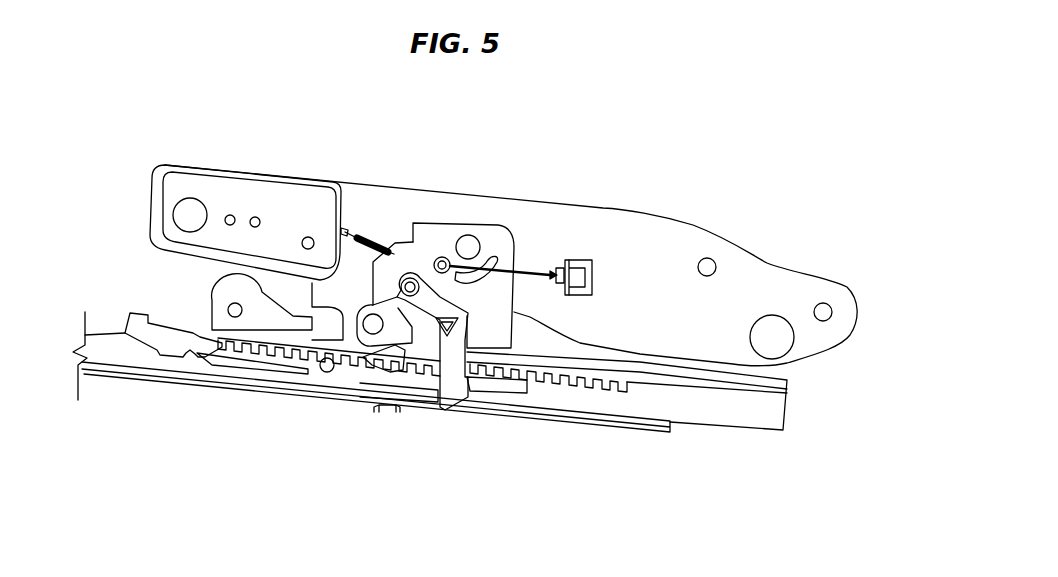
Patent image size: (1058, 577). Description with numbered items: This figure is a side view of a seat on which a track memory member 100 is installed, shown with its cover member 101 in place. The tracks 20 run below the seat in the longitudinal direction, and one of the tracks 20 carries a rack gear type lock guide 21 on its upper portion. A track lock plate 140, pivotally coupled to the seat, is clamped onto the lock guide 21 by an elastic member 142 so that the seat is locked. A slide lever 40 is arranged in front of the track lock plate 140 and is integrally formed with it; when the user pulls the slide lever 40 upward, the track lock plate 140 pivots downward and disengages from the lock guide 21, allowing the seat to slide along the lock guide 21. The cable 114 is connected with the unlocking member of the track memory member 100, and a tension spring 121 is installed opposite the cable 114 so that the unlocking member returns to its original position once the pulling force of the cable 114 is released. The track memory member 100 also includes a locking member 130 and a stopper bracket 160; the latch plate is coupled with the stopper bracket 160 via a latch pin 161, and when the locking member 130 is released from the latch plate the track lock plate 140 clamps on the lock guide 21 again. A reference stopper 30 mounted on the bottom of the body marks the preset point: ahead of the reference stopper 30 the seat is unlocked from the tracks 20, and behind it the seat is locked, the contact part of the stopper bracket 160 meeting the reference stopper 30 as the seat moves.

The track memory member 100 is at (513, 221).
The cover member 101 is at (443, 233).
The cable 114 is at (537, 263).
The tension spring 121 is at (384, 232).
The latch pin 161 is at (413, 283).
The locking member 130 is at (410, 325).
The stopper bracket 160 is at (460, 410).
The track lock plate 140 is at (327, 373).
The elastic member 142 is at (383, 357).
The reference stopper 30 is at (385, 407).
The slide lever 40 is at (143, 317).
The tracks 20 is at (557, 393).
The lock guide 21 is at (617, 388).